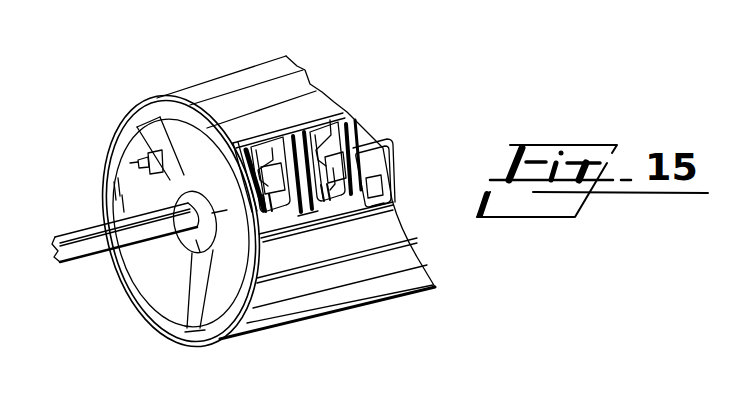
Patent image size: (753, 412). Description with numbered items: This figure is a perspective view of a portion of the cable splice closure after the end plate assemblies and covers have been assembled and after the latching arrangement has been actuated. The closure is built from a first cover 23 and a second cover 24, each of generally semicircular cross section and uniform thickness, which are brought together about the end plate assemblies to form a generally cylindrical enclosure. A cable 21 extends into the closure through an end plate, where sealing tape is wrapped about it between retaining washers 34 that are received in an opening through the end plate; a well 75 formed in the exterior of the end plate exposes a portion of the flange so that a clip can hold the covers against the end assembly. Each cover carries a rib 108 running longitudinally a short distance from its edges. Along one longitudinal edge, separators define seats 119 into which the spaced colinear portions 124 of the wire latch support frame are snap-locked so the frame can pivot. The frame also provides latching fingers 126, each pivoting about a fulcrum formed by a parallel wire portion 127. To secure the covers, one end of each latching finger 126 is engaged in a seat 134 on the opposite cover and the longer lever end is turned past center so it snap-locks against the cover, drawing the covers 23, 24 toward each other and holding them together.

The first cover 23 is at (234, 72).
The second cover 24 is at (392, 297).
The cable 21 is at (78, 262).
The retaining washer 34 is at (197, 243).
The well 75 is at (190, 313).
The rib 108 is at (309, 121).
The latching finger 126 is at (320, 137).
The wire portion 127 is at (340, 142).
The seat 134 is at (340, 172).
The seat 119 is at (376, 188).
The colinear portion 124 is at (375, 203).